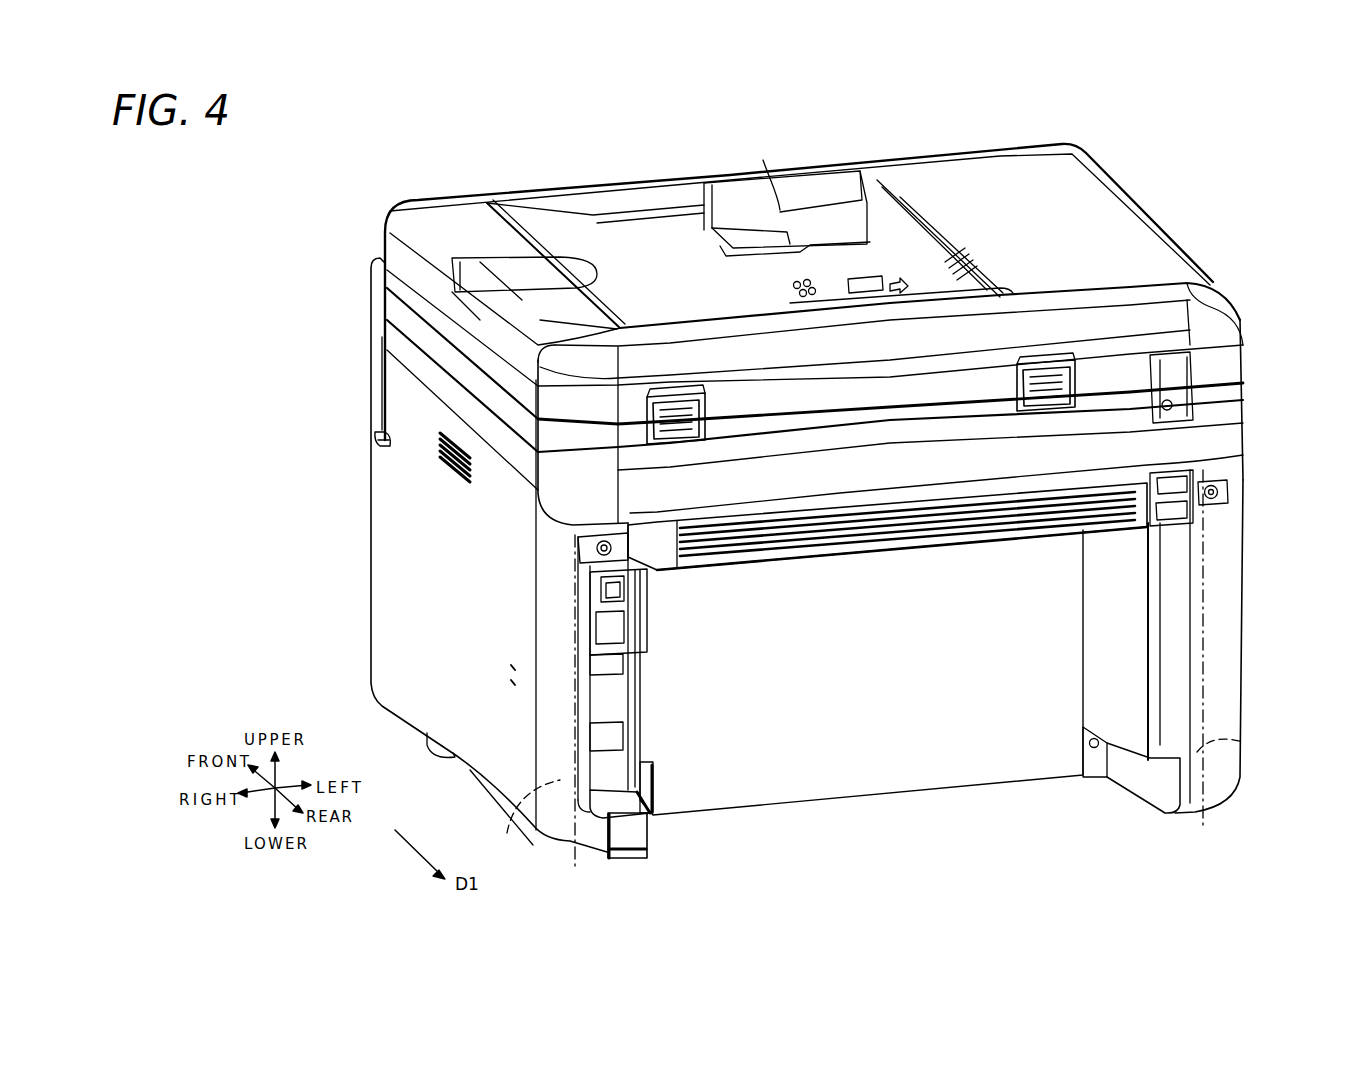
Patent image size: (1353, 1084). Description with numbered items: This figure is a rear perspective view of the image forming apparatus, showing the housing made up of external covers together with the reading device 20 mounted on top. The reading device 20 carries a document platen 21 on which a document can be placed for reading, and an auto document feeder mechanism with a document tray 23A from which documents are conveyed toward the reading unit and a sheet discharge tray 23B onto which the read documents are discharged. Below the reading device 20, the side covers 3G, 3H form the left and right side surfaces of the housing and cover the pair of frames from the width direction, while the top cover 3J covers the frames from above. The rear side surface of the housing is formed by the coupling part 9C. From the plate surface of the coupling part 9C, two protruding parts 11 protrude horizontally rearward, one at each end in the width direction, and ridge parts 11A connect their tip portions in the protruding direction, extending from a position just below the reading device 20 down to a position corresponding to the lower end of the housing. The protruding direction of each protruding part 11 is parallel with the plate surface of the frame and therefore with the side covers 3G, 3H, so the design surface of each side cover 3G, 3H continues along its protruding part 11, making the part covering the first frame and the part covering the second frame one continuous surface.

The reading device 20 is at (1205, 268).
The document platen 21 is at (1228, 437).
The document tray 23A is at (853, 302).
The sheet discharge tray 23B is at (637, 243).
The top cover 3J is at (381, 433).
The side cover 3G is at (407, 617).
The side cover 3H is at (1220, 633).
The coupling part 9C is at (893, 740).
The protruding part 11 is at (637, 718).
The ridge part 11A is at (507, 833).